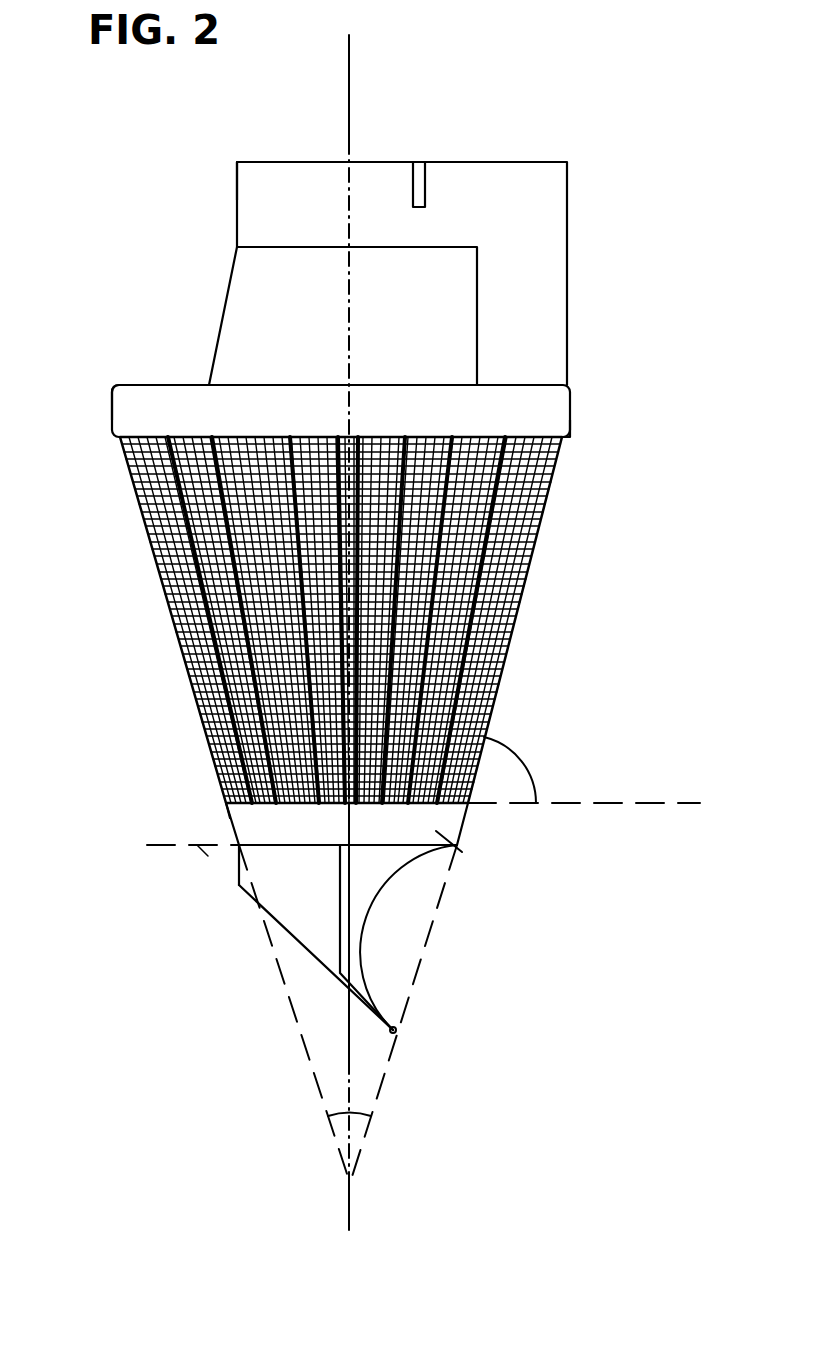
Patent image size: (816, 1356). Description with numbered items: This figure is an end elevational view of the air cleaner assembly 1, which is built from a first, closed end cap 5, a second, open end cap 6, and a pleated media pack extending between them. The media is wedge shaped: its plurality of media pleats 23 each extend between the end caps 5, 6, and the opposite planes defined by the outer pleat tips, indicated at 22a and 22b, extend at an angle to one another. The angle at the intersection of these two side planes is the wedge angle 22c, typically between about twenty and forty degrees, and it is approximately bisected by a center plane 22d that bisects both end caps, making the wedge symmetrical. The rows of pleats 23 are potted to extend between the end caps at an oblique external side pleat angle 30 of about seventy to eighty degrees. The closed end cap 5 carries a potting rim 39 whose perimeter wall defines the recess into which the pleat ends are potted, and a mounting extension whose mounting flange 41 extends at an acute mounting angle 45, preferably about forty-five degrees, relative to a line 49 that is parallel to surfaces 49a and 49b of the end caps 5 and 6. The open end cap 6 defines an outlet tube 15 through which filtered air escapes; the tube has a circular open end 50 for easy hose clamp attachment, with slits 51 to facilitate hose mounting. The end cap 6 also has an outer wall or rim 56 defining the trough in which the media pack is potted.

The air cleaner assembly 1 is at (632, 300).
The first, closed, end cap 5 is at (464, 818).
The second, open, end cap 6 is at (555, 406).
The outlet tube 15 is at (567, 163).
The side plane of media 22a is at (428, 915).
The side plane of media 22b is at (290, 995).
The wedge angle 22c is at (371, 1116).
The center plane 22d is at (350, 55).
The media pleats 23 is at (513, 610).
The external side pleat angle 30 is at (522, 766).
The potting rim 39 is at (452, 848).
The mounting flange 41 is at (390, 1036).
The mounting angle 45 is at (232, 862).
The reference line 49 is at (678, 803).
The surface of first end cap 49a is at (225, 803).
The surface of second end cap 49b is at (572, 440).
The circular open end 50 is at (236, 162).
The slits 51 is at (420, 162).
The outer wall or rim 56 is at (112, 386).